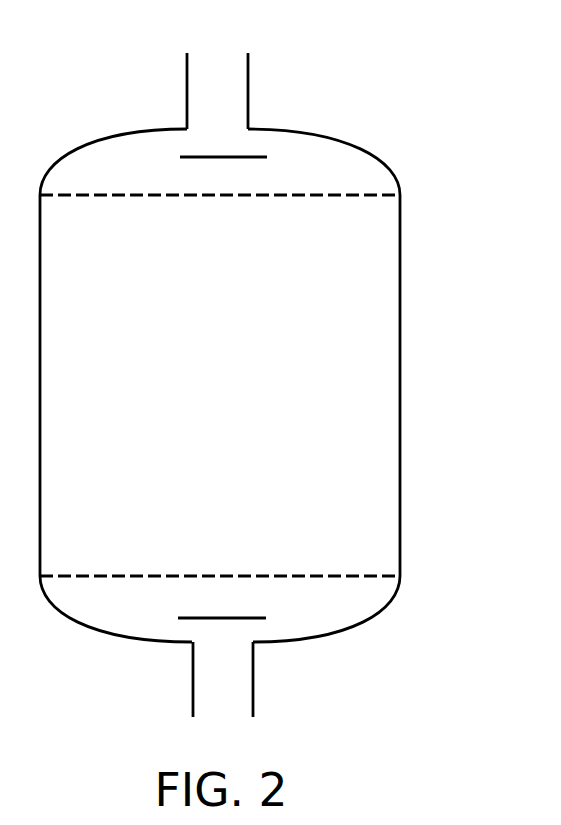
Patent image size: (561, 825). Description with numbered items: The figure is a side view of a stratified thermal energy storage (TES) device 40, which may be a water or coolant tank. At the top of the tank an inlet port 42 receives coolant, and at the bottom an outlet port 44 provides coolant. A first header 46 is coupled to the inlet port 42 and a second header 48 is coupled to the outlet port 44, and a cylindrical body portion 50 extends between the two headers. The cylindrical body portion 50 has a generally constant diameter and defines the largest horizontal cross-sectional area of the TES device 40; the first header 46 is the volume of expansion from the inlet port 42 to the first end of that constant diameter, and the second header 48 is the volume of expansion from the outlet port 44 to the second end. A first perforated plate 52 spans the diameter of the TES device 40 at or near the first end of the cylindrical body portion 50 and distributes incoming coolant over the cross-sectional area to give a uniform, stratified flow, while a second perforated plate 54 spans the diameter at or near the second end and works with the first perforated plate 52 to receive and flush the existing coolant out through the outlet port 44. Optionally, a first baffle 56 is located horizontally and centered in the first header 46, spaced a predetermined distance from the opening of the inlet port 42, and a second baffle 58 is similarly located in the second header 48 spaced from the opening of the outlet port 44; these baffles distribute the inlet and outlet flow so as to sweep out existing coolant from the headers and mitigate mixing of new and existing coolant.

The stratified TES device 40 is at (260, 345).
The inlet port 42 is at (223, 56).
The outlet port 44 is at (223, 700).
The first header 46 is at (102, 176).
The second header 48 is at (107, 626).
The cylindrical body portion 50 is at (209, 396).
The first perforated plate 52 is at (150, 197).
The second perforated plate 54 is at (150, 574).
The first baffle 56 is at (218, 159).
The second baffle 58 is at (235, 617).